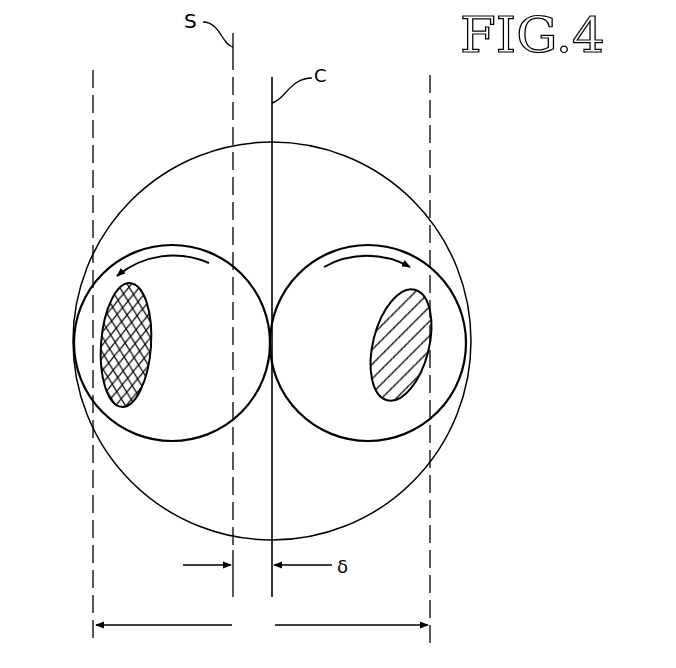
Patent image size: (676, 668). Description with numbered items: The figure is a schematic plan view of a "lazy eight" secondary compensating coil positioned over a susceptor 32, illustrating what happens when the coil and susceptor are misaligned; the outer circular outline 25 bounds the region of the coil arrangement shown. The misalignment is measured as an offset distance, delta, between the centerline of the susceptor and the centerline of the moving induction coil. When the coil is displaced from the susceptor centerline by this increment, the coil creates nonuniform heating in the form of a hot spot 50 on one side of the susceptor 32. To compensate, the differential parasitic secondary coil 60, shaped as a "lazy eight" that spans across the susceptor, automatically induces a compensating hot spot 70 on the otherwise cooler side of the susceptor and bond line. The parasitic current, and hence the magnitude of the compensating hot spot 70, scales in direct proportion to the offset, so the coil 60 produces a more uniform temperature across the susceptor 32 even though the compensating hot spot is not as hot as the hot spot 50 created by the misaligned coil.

The outer casing / barrel bore 25 is at (398, 186).
The susceptor 32 is at (262, 626).
The hot spot 50 is at (101, 372).
The parasitic coil 60 is at (435, 420).
The compensating hot spot 70 is at (421, 326).